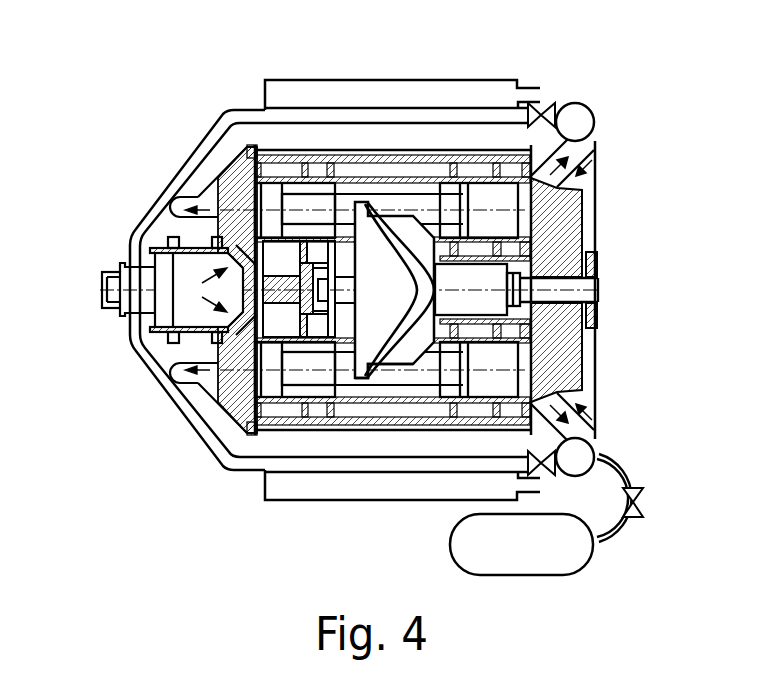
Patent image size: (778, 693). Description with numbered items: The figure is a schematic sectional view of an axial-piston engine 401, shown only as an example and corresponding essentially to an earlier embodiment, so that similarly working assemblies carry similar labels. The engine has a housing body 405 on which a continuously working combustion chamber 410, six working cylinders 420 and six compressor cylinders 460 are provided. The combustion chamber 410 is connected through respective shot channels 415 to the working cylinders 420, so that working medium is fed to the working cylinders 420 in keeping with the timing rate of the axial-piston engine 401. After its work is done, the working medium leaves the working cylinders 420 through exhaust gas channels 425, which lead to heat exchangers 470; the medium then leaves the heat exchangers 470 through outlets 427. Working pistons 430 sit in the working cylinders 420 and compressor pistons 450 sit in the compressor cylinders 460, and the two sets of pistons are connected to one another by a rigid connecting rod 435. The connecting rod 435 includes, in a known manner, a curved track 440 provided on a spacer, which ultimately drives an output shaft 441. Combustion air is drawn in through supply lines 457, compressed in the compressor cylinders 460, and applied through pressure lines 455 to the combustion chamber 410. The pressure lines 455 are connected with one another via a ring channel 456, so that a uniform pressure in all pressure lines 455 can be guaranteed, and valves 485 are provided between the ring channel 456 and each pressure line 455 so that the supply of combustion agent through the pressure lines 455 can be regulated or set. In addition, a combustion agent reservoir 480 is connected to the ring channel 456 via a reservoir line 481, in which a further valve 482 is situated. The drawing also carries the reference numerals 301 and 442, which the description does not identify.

The cooling system 301 is at (136, 482).
The axial-piston engine 401 is at (130, 456).
The housing body 405 is at (343, 150).
The combustion chamber 410 is at (167, 272).
The shot channels 415 is at (218, 348).
The working cylinders 420 is at (302, 390).
The exhaust gas channels 425 is at (188, 196).
The outlets 427 is at (530, 90).
The working pistons 430 is at (268, 195).
The connecting rod 435 is at (395, 380).
The curved track 440 is at (370, 200).
The output shaft 441 is at (588, 295).
The rotor blade 442 is at (407, 240).
The compressor pistons 450 is at (452, 380).
The pressure lines 455 is at (212, 137).
The ring channel 456 is at (573, 120).
The supply lines 457 is at (555, 193).
The compressor cylinders 460 is at (516, 222).
The heat exchangers 470 is at (300, 88).
The combustion agent reservoir 480 is at (476, 560).
The reservoir line 481 is at (630, 478).
The valve 482 is at (643, 508).
The valves 485 is at (545, 103).